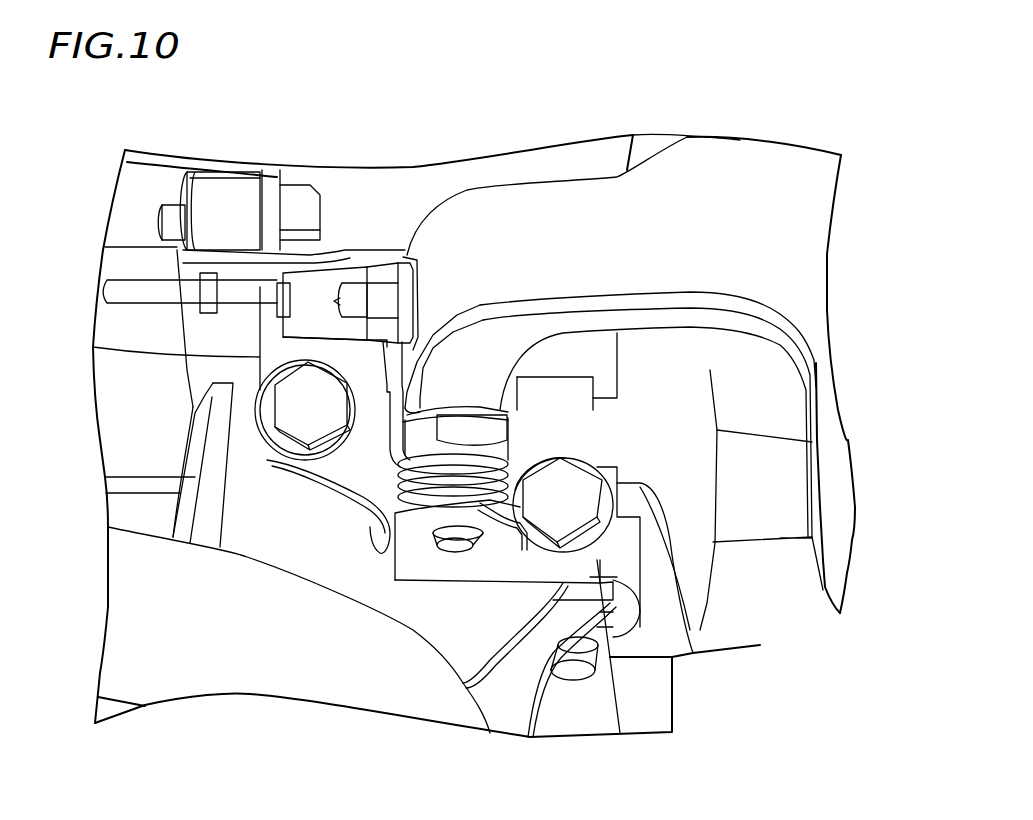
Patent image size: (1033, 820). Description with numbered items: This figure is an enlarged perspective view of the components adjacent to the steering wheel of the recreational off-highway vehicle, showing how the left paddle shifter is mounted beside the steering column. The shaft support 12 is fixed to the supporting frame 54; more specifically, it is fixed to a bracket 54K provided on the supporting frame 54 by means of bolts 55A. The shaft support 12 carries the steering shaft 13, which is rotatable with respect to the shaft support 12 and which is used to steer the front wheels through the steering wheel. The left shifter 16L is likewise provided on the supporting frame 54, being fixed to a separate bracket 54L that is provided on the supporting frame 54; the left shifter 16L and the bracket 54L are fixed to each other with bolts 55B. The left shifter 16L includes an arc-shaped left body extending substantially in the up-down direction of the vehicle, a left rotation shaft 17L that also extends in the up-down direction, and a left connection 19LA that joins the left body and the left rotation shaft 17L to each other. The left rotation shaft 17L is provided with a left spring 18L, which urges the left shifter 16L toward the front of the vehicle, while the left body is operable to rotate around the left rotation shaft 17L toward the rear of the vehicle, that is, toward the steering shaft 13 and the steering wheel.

The left shifter 16L is at (568, 178).
The left connection 19LA is at (663, 197).
The steering shaft 13 is at (767, 523).
The shaft support 12 is at (707, 602).
The bolts 55B is at (307, 413).
The bolts 55A is at (580, 677).
The supporting frame 54 is at (270, 677).
The bracket 54L is at (480, 657).
The bracket 54K is at (580, 610).
The left spring 18L is at (447, 467).
The left rotation shaft 17L is at (472, 490).